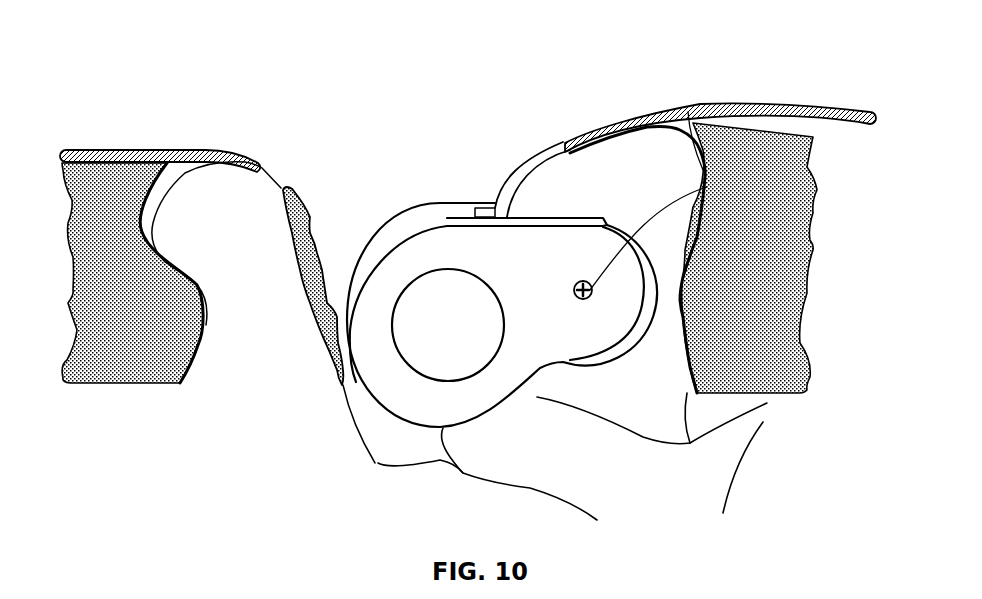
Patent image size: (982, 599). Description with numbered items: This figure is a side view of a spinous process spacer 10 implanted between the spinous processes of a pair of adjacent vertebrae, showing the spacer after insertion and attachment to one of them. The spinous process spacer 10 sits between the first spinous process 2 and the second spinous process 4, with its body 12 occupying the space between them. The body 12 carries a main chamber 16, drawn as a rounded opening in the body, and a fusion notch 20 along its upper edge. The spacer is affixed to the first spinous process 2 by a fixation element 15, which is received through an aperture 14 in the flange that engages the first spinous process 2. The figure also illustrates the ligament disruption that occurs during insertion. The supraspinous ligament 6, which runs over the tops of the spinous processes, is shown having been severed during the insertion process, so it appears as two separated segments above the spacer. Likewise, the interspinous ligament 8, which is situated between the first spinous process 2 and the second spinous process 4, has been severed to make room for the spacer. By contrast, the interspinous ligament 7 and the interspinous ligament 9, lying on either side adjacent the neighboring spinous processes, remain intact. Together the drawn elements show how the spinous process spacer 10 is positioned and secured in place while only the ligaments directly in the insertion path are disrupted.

The first spinous process 2 is at (547, 182).
The second spinous process 4 is at (247, 200).
The supraspinous ligament 6 is at (158, 150).
The interspinous ligament 7 is at (790, 222).
The interspinous ligament 8 is at (303, 213).
The interspinous ligament 9 is at (125, 362).
The spinous process spacer 10 is at (453, 90).
The body 12 is at (408, 225).
The aperture 14 is at (597, 293).
The fixation element 15 is at (707, 187).
The main chamber 16 is at (433, 333).
The fusion notch 20 is at (485, 208).